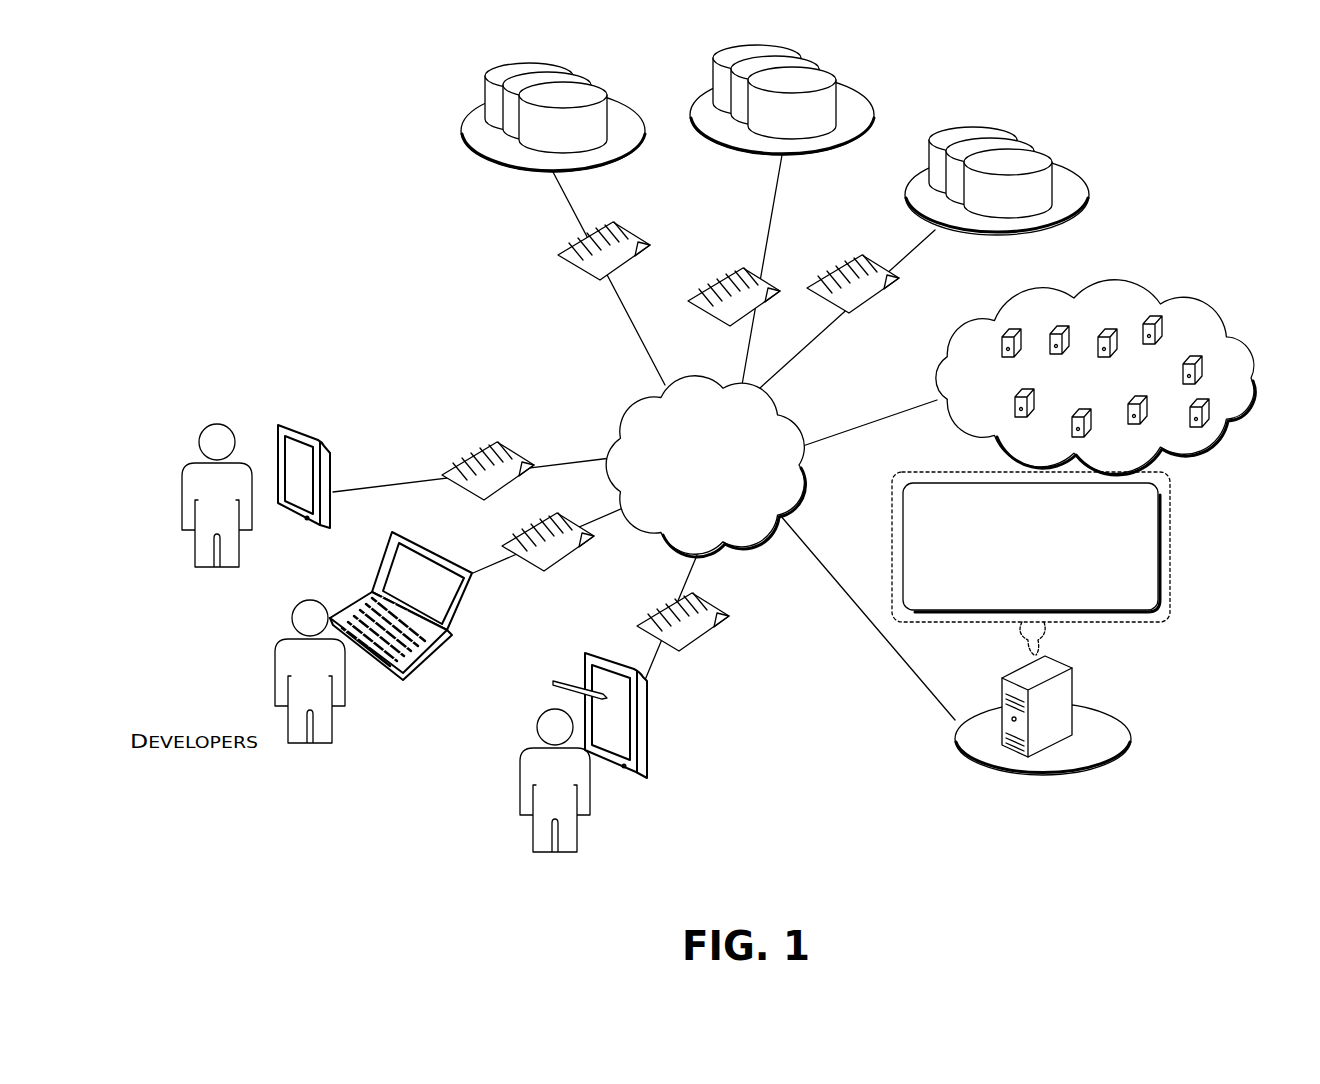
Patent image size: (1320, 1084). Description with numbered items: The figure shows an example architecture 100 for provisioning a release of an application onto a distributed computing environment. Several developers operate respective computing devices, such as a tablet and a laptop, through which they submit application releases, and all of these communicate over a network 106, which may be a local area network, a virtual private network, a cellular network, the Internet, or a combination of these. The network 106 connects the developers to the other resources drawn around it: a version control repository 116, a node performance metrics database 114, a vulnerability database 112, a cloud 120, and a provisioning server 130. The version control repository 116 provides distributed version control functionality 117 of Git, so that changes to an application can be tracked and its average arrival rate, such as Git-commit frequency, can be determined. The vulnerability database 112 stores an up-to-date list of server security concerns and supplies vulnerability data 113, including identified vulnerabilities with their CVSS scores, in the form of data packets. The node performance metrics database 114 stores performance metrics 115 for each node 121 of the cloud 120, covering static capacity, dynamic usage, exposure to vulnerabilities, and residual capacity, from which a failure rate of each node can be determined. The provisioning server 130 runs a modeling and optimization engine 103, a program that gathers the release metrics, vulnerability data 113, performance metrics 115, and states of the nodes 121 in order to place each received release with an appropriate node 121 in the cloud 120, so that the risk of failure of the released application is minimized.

The architecture 100 is at (172, 89).
The modeling and optimization (MO) engine 103 is at (1047, 601).
The network 106 is at (640, 405).
The vulnerability database 112 is at (1070, 188).
The vulnerability data 113 is at (885, 300).
The node performance metrics database 114 is at (837, 155).
The performance metrics 115 is at (758, 285).
The version control repository 116 is at (542, 172).
The distributed version control functionality 117 is at (562, 255).
The cloud 120 is at (1121, 377).
The node 121 is at (1216, 341).
The provisioning server 130 is at (1115, 725).